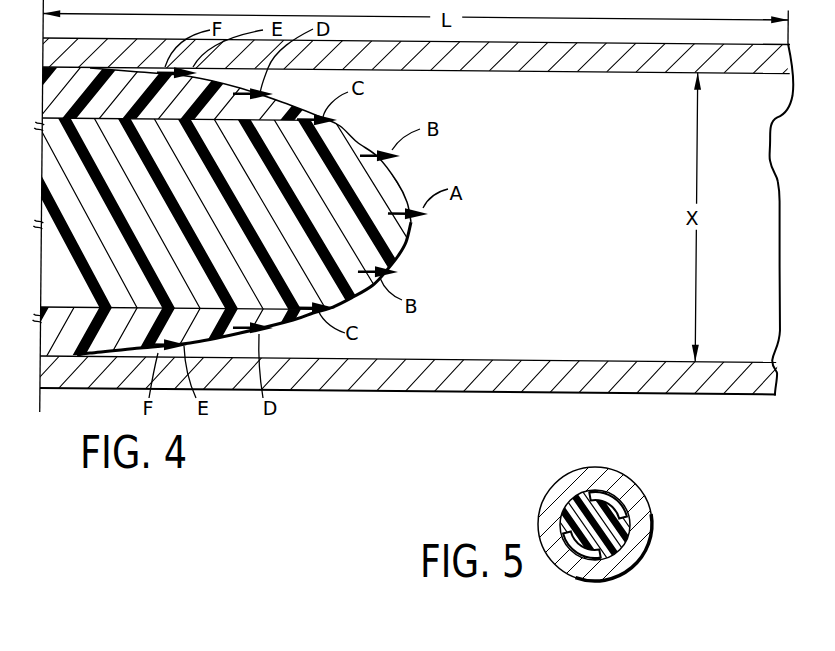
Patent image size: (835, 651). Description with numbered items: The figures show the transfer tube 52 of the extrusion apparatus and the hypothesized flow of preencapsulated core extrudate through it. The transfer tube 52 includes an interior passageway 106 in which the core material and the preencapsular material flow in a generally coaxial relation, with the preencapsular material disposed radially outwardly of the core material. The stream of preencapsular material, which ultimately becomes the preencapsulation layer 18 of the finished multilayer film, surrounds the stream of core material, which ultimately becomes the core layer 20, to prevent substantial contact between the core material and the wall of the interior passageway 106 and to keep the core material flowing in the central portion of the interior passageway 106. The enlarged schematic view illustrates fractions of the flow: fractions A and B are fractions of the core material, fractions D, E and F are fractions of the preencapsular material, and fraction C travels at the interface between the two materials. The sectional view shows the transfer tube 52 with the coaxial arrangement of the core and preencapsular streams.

In FIG. 4, the interior passageway 106 is at (626, 68).
In FIG. 4, the transfer tube 52 is at (408, 404).
In FIG. 5, the transfer tube 52 is at (633, 493).
In FIG. 5, the preencapsulation layer 18 is at (623, 532).
In FIG. 5, the core layer 20 is at (605, 543).